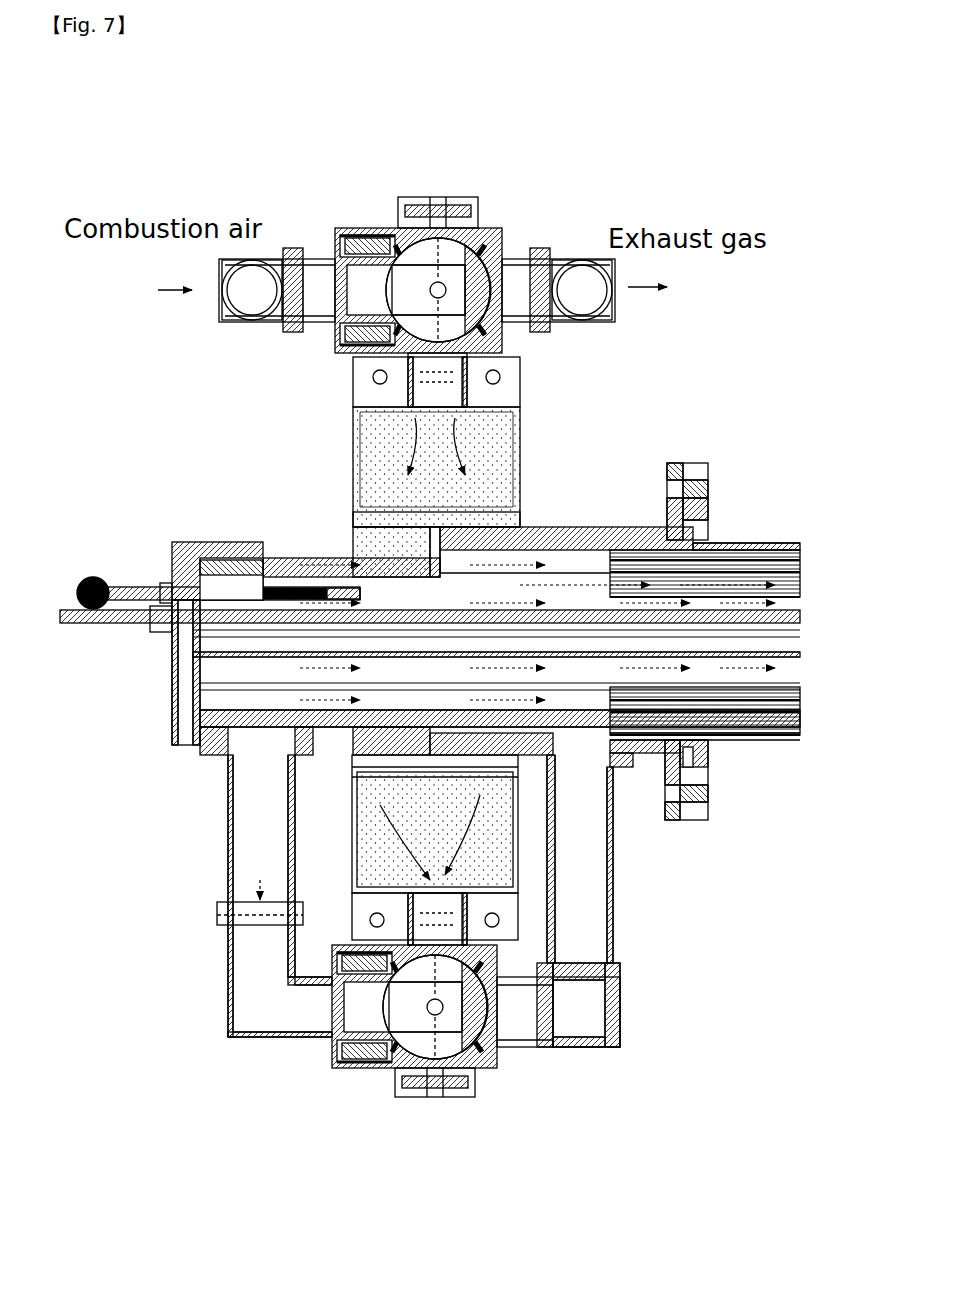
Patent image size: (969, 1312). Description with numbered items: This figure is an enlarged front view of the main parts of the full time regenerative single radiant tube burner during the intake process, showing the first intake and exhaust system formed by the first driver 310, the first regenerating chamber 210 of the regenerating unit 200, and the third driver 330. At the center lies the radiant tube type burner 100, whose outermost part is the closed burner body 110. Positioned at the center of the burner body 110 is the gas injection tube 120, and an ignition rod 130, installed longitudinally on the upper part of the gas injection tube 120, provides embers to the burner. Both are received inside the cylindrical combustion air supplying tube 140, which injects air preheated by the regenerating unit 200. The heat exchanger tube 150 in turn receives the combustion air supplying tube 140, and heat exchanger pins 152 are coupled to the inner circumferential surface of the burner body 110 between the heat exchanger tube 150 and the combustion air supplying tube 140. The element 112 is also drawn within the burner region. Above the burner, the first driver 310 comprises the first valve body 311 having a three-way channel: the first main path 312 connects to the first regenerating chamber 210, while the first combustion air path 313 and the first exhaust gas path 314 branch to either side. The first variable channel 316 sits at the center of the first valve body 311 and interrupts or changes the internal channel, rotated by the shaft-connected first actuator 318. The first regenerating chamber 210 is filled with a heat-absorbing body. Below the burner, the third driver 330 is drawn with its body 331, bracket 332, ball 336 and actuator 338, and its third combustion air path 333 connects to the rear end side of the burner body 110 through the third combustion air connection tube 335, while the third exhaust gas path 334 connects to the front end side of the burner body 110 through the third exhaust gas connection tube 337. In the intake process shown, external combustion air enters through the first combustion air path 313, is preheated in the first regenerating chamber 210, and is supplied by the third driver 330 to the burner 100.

The radiant tube type burner 100 is at (118, 528).
The burner body 110 is at (335, 592).
The ignition electrode rod 112 is at (352, 583).
The gas injection tube 120 is at (172, 690).
The ignition rod 130 is at (112, 624).
The combustion air supplying tube 140 is at (740, 727).
The heat exchanger tube 150 is at (725, 562).
The heat exchanger pin 152 is at (780, 545).
The regenerating unit 200 is at (528, 648).
The first regenerating chamber 210 is at (520, 455).
The first driver 310 is at (342, 178).
The first valve body 311 is at (497, 228).
The first main path 312 is at (372, 380).
The first combustion air path 313 is at (353, 307).
The first exhaust gas path 314 is at (615, 325).
The first variable channel 316 is at (445, 227).
The first actuator 318 is at (436, 197).
The third driver 330 is at (348, 1102).
The second valve body 331 is at (480, 1068).
The second valve bracket 332 is at (500, 953).
The third combustion air path 333 is at (332, 1015).
The third exhaust gas path 334 is at (522, 1062).
The third combustion air connection tube 335 is at (228, 865).
The second valve ball 336 is at (437, 1100).
The third exhaust gas connection tube 337 is at (614, 960).
The second valve actuator 338 is at (410, 1100).